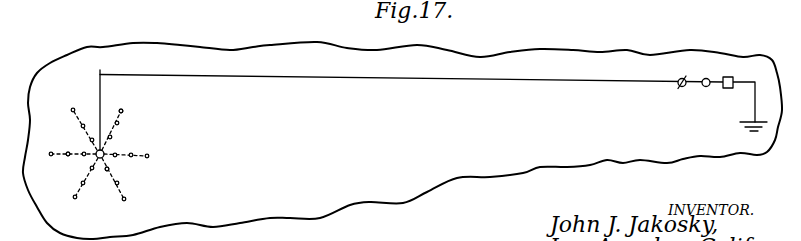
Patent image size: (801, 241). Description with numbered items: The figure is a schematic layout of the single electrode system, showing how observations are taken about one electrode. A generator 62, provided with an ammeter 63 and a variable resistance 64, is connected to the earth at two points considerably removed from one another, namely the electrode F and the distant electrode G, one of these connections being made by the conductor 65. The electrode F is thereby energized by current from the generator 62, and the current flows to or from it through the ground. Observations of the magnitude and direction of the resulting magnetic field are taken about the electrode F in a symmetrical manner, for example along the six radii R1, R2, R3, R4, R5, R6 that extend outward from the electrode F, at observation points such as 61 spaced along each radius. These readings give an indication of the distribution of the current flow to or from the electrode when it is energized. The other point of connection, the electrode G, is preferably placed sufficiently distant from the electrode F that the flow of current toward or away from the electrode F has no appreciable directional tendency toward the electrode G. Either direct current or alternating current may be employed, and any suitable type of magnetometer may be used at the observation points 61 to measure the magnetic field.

The electrode F is at (105, 148).
The conductor 65 is at (100, 95).
The radius R1 is at (63, 155).
The radius R2 is at (82, 123).
The radius R3 is at (122, 127).
The radius R4 is at (136, 157).
The radius R5 is at (120, 187).
The radius R6 is at (82, 187).
The observation point 61 is at (68, 157).
The generator 62 is at (679, 87).
The ammeter 63 is at (705, 87).
The variable resistance 64 is at (731, 88).
The electrode G is at (753, 136).